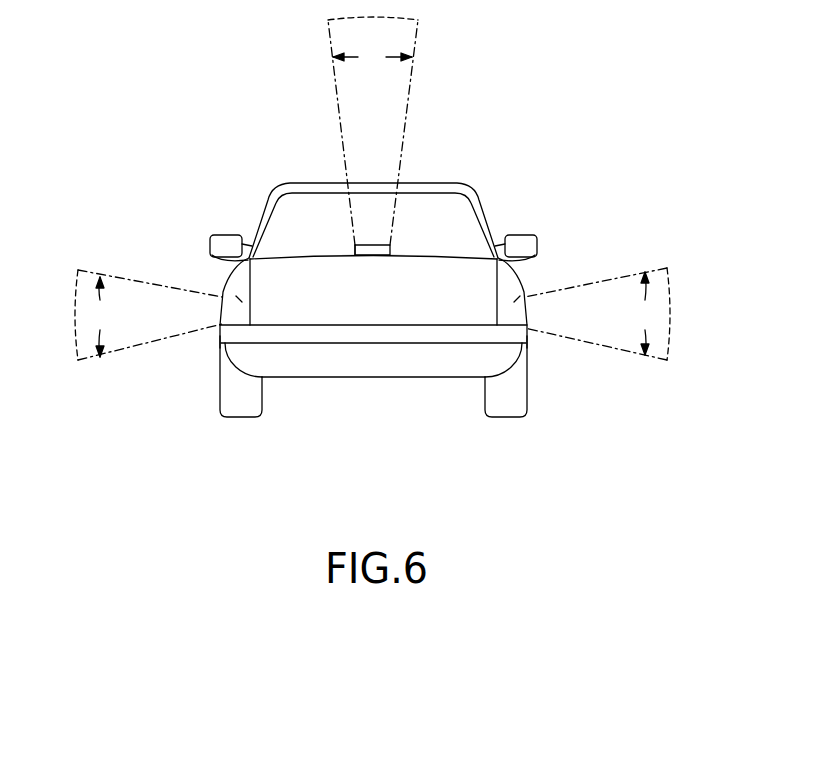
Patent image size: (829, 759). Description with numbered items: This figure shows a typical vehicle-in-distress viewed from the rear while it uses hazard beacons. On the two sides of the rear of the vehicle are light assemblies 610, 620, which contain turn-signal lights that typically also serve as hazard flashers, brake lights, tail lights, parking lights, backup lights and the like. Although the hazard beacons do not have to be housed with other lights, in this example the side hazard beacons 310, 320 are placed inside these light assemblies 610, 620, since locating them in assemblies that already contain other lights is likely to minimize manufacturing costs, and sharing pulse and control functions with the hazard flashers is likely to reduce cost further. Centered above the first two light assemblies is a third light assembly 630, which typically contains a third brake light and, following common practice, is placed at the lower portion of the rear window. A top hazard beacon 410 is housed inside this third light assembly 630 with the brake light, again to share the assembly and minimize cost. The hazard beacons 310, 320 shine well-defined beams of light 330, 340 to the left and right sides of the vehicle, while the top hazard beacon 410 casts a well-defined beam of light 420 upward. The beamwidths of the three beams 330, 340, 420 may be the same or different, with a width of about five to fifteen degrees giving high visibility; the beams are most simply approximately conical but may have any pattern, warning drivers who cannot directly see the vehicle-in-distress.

The hazard beacon 310 is at (240, 300).
The hazard beacon 320 is at (522, 297).
The well-defined beam of light 330 is at (95, 268).
The well-defined beam of light 340 is at (622, 275).
The top hazard beacon 410 is at (392, 247).
The well-defined beam of light 420 is at (412, 117).
The light assembly 610 is at (220, 342).
The light assembly 620 is at (522, 342).
The third light assembly 630 is at (354, 244).